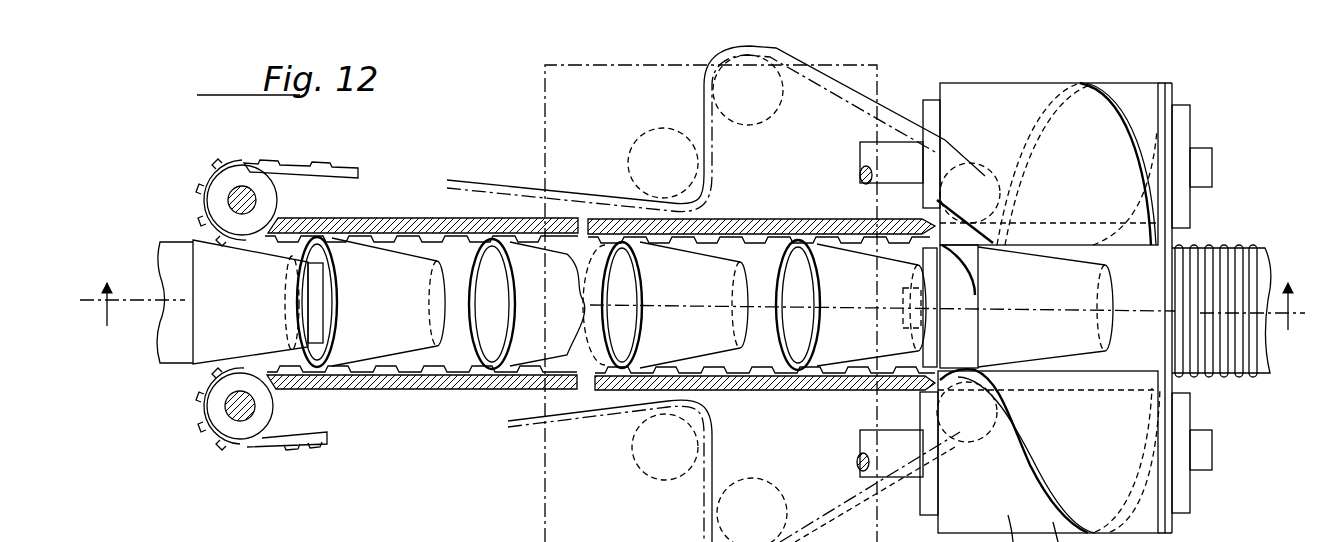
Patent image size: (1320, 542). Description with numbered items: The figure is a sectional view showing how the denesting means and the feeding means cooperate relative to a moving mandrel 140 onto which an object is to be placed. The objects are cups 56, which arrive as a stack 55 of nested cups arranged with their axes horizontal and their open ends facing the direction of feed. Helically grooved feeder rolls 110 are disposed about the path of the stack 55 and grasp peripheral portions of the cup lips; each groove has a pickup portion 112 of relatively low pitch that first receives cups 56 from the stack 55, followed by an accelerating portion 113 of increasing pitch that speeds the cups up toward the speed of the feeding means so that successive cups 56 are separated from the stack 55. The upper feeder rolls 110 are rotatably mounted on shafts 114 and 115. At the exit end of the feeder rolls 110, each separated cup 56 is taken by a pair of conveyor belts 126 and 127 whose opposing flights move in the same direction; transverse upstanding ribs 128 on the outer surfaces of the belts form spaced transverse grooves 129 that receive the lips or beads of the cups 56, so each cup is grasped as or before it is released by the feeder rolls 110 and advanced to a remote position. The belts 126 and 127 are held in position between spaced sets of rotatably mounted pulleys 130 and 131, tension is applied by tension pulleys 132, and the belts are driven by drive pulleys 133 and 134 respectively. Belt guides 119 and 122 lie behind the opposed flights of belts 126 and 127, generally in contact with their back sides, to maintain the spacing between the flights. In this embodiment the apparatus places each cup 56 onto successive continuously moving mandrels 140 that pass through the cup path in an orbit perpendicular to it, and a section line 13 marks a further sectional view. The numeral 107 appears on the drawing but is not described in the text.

The section line 13- 13 is at (692, 284).
The stack 55 is at (1253, 380).
The cups 56 is at (388, 265).
The tape applying station 107 is at (545, 497).
The feeder rolls 110 is at (1012, 100).
The pickup portion 112 is at (1178, 421).
The accelerating portion 113 is at (1022, 438).
The shaft 114 is at (888, 170).
The shaft 115 is at (860, 441).
The belt guide 119 is at (317, 218).
The belt guide 122 is at (428, 389).
The conveyor belt 126 is at (334, 162).
The conveyor belt 127 is at (293, 444).
The transverse upstanding ribs 128 is at (280, 165).
The transverse grooves 129 is at (427, 241).
The pulleys 130 is at (222, 192).
The pulleys 131 is at (962, 163).
The tension pulleys 132 is at (768, 120).
The drive pulley 133 is at (640, 150).
The drive pulley 134 is at (640, 470).
The mandrel 140 is at (213, 240).